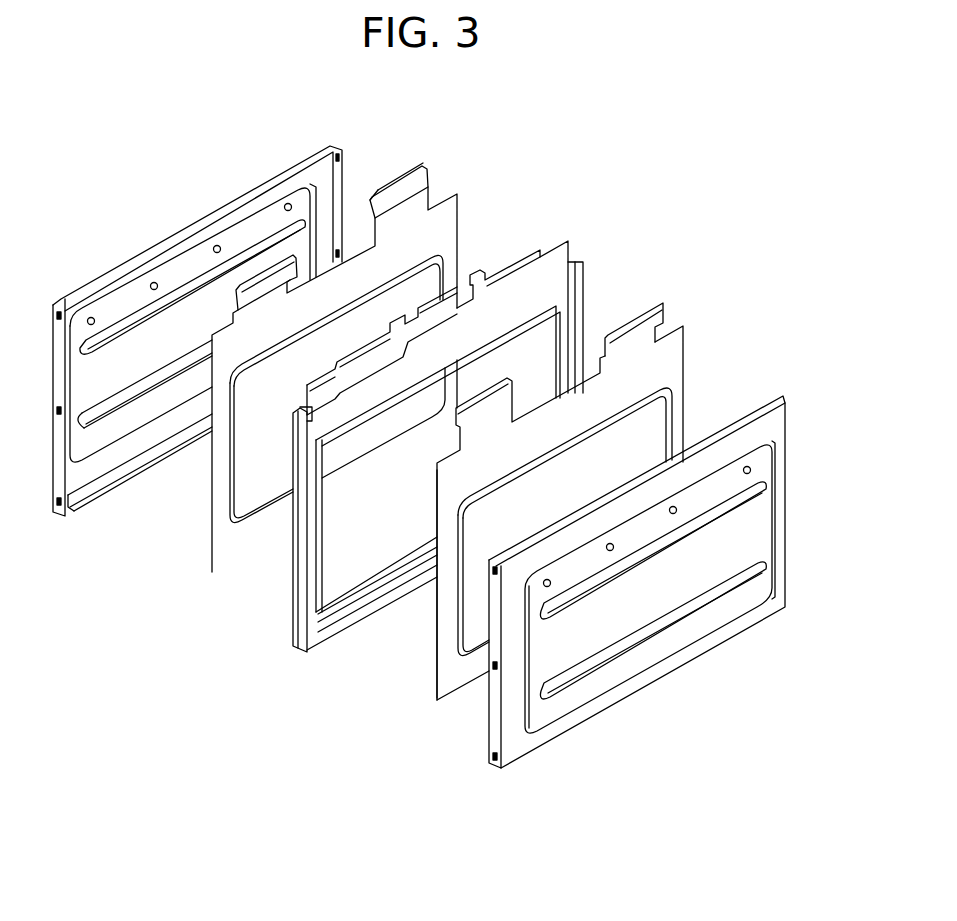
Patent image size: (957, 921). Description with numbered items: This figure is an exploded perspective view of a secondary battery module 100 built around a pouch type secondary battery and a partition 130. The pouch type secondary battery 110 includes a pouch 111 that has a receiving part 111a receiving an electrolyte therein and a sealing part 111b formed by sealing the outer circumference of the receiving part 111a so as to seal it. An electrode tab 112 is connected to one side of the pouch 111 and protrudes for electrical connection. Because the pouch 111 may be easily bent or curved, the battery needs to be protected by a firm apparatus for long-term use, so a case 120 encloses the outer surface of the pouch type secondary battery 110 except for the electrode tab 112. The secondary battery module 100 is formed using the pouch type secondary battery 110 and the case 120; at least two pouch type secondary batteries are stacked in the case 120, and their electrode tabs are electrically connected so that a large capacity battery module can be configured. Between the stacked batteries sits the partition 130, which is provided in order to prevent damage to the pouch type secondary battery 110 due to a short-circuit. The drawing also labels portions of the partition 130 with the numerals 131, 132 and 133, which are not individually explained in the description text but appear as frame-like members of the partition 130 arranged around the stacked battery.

The secondary battery module 100 is at (686, 214).
The pouch type secondary battery 110 is at (689, 353).
The pouch 111 is at (430, 468).
The receiving part 111a is at (660, 432).
The sealing part 111b is at (672, 382).
The electrode tab 112 is at (657, 315).
The case 120 is at (488, 738).
The partition 130 is at (569, 230).
The housing top frame member 131 is at (578, 238).
The housing side frame member 132 is at (295, 420).
The housing bottom frame member 133 is at (338, 618).